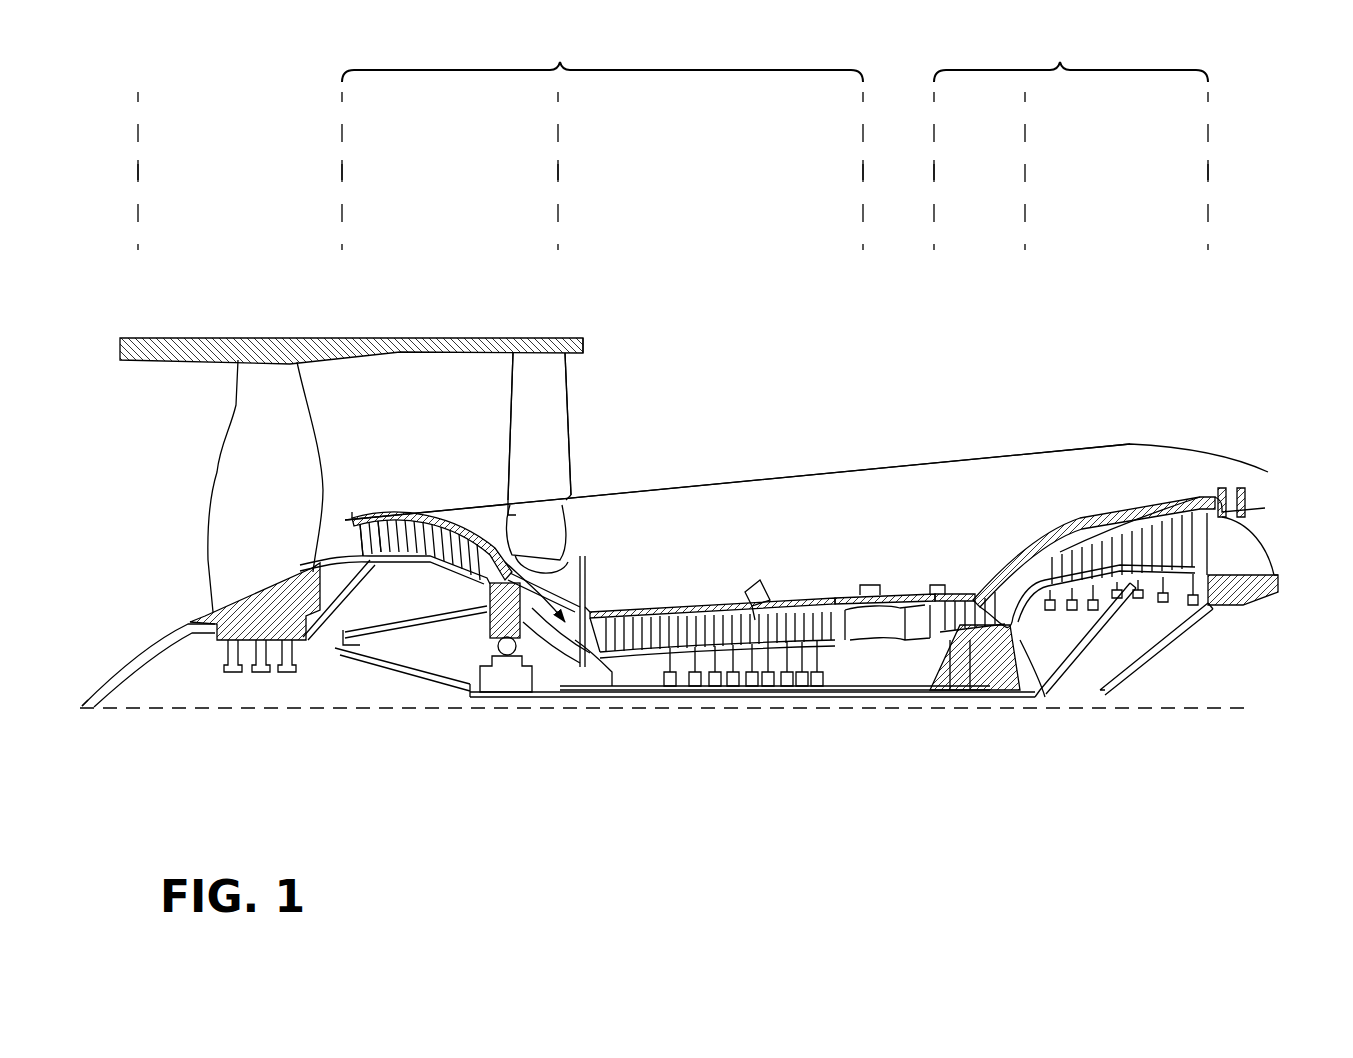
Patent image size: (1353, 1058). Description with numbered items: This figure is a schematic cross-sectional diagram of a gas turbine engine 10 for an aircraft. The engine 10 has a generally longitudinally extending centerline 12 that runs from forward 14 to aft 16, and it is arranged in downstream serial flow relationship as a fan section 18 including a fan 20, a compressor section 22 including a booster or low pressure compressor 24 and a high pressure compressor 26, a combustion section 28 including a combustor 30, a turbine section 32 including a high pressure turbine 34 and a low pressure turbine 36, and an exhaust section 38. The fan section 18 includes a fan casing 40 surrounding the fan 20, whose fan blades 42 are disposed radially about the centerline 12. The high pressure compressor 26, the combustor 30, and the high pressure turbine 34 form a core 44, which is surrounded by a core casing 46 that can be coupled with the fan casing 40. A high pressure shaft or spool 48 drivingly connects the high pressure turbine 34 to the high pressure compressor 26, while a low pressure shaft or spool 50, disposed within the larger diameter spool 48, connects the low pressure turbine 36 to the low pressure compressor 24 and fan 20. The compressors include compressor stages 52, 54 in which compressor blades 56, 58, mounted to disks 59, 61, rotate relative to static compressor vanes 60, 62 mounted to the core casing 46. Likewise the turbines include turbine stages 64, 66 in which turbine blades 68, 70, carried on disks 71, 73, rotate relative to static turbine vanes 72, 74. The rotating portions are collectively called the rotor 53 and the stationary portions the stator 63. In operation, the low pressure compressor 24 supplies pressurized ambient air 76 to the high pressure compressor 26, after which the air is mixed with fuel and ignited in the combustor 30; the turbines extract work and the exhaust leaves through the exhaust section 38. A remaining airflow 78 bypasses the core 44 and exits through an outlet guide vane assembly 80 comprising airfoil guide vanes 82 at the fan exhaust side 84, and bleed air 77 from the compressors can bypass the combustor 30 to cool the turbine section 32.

The gas turbine engine 10 is at (890, 330).
The centerline 12 is at (235, 712).
The forward 14 is at (113, 476).
The aft 16 is at (1325, 560).
The fan section 18 is at (340, 170).
The fan 20 is at (168, 553).
The compressor section 22 is at (602, 57).
The low pressure compressor 24 is at (556, 170).
The high pressure compressor 26 is at (861, 170).
The combustion section 28 is at (865, 170).
The combustor 30 is at (895, 612).
The turbine section 32 is at (1071, 57).
The high pressure turbine 34 is at (936, 170).
The low pressure turbine 36 is at (1206, 170).
The exhaust section 38 is at (1286, 514).
The fan casing 40 is at (258, 352).
The fan blades 42 is at (295, 415).
The core 44 is at (840, 512).
The core casing 46 is at (1160, 497).
The HP shaft or spool 48 is at (872, 660).
The LP shaft or spool 50 is at (490, 700).
The compressor stages 52 is at (405, 458).
The rotor 53 is at (436, 568).
The compressor stages 54 is at (678, 572).
The compressor blades 56 is at (375, 522).
The compressor blades 58 is at (630, 616).
The disk 59 is at (375, 562).
The static compressor vanes 60 is at (360, 522).
The disk 61 is at (634, 660).
The static compressor vanes 62 is at (603, 618).
The stator 63 is at (612, 660).
The turbine stages 64 is at (1000, 540).
The turbine stages 66 is at (1040, 462).
The turbine blades 68 is at (950, 612).
The turbine blades 70 is at (1050, 565).
The disk 71 is at (942, 660).
The static turbine vanes 72 is at (926, 610).
The disk 73 is at (1050, 660).
The static turbine vanes 74 is at (1040, 630).
The pressurized ambient air 76 is at (562, 572).
The bleed air 77 is at (722, 600).
The airflow 78 is at (630, 410).
The outlet guide vane assembly 80 is at (585, 462).
The airfoil guide vanes 82 is at (520, 448).
The fan exhaust side 84 is at (612, 366).